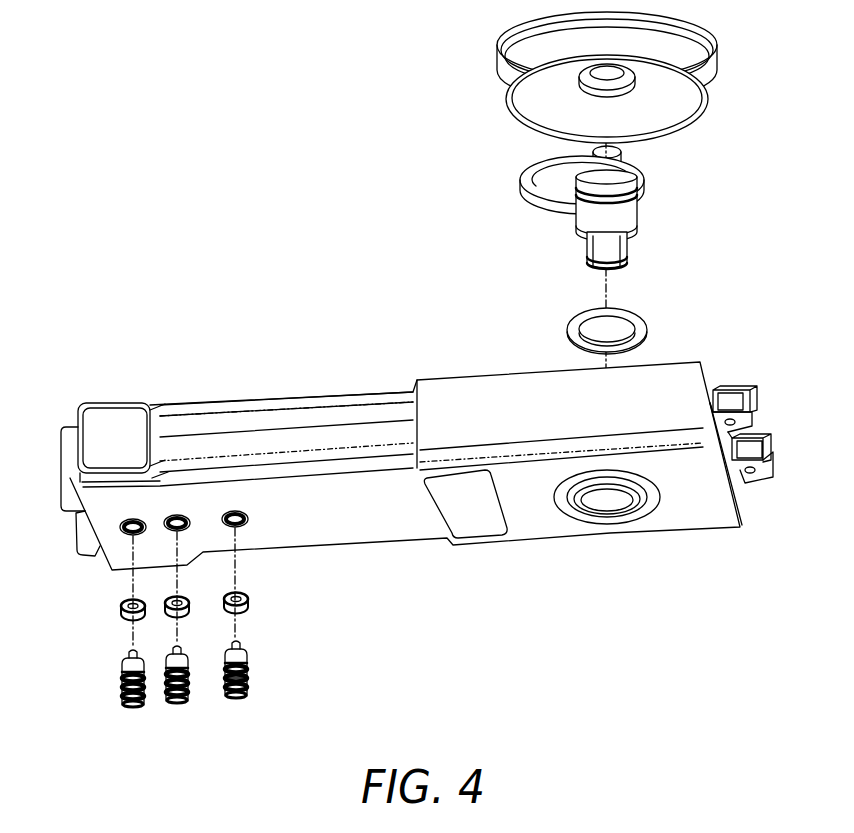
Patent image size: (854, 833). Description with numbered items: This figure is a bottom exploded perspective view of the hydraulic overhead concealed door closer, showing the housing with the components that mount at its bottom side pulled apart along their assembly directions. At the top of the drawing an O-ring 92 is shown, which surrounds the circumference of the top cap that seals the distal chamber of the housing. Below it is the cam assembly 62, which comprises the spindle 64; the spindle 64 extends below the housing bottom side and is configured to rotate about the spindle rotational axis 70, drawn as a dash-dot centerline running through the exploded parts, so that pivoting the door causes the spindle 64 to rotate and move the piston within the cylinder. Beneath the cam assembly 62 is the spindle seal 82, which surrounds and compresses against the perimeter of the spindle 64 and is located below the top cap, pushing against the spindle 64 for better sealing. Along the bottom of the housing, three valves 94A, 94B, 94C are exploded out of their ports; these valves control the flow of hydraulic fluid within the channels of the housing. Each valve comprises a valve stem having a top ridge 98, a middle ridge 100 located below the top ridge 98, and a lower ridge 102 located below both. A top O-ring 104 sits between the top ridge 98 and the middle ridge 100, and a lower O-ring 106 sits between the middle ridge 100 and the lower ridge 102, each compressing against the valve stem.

The spindle rotational axis 70 is at (673, 26).
The O-ring 92 is at (690, 118).
The cam assembly 62 is at (524, 196).
The spindle 64 is at (628, 252).
The spindle seal 82 is at (646, 320).
The valve 94A is at (130, 710).
The valve 94B is at (176, 706).
The valve 94C is at (234, 700).
The top O-ring 104 is at (248, 598).
The lower O-ring 106 is at (248, 607).
The top ridge 98 is at (250, 668).
The middle ridge 100 is at (250, 680).
The lower ridge 102 is at (246, 694).